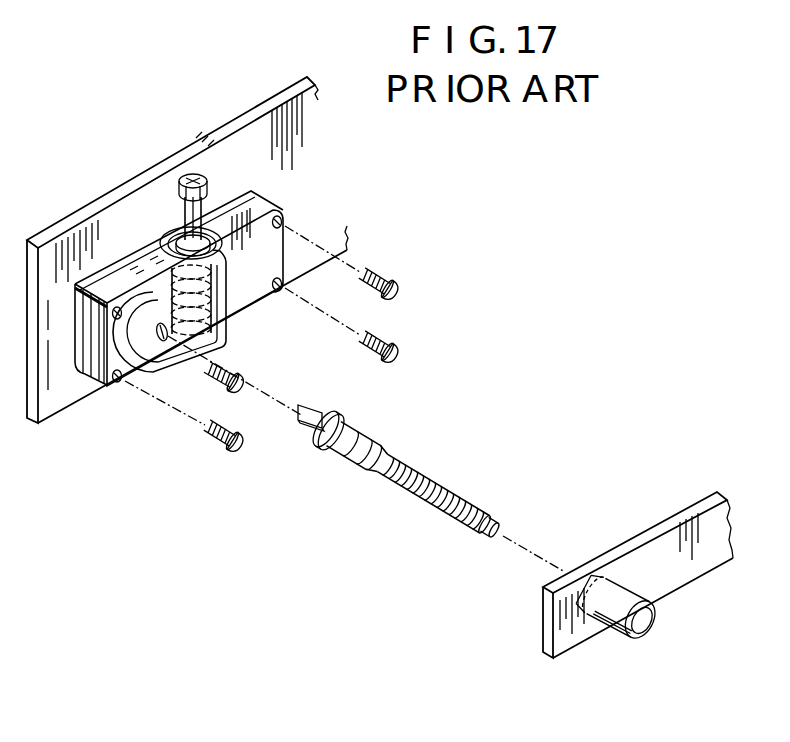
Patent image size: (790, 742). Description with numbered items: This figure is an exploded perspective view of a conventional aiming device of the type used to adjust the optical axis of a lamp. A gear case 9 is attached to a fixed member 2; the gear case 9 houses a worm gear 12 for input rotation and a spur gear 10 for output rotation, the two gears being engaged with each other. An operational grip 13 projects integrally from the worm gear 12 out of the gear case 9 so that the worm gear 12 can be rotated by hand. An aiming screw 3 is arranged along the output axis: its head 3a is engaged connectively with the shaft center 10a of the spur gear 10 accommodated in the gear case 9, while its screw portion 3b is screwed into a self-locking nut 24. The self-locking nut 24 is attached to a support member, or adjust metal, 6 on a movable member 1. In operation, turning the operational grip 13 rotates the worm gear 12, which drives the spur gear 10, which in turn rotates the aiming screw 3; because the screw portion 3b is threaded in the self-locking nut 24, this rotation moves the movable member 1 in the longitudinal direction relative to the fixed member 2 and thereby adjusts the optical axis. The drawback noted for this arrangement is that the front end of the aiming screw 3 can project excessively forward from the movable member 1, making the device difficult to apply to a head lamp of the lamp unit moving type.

The movable member 1 is at (638, 572).
The support member (adjust metal) 6 is at (648, 533).
The fixed member 2 is at (228, 124).
The aiming screw 3 is at (431, 476).
The head of aiming screw 3a is at (313, 410).
The screw portion of aiming screw 3b is at (484, 507).
The gear case 9 is at (128, 264).
The spur gear 10 is at (128, 388).
The shaft center of spur gear 10a is at (165, 352).
The worm gear 12 is at (222, 327).
The operational grip 13 is at (185, 174).
The self-locking nut 24 is at (620, 630).